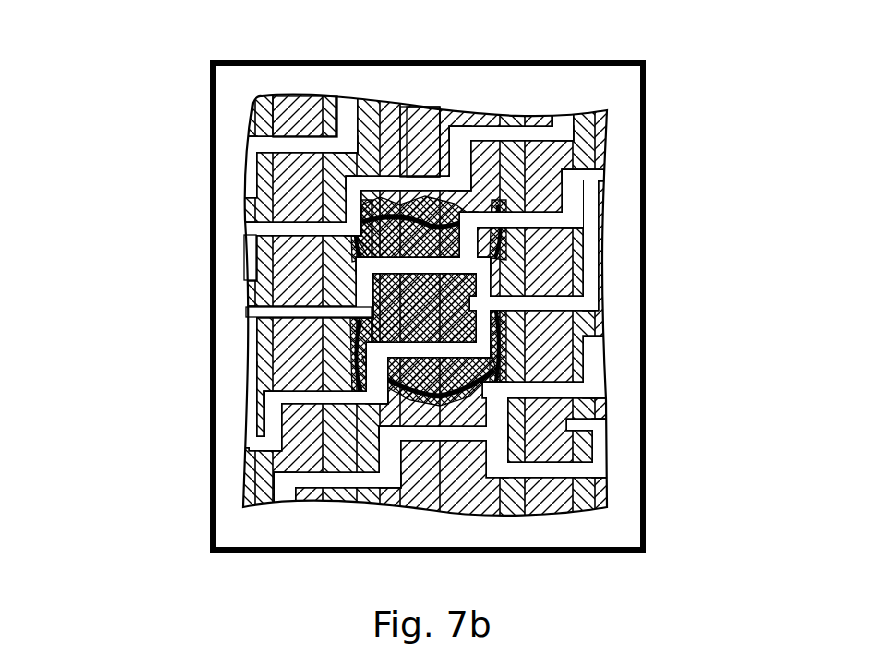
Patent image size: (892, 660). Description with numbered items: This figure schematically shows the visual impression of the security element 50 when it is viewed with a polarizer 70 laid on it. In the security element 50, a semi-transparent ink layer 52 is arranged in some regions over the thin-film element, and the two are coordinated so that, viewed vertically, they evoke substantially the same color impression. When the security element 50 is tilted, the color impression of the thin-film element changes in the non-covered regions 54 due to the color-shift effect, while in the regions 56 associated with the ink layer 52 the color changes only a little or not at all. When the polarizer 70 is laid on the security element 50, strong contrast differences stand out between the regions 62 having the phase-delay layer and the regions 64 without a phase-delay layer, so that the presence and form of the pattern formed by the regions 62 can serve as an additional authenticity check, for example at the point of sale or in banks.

The security element 50 is at (160, 62).
The semi-transparent ink layer 52 is at (425, 108).
The non-covered regions 54 is at (298, 108).
The regions covered by the ink layer 56 is at (423, 142).
The regions having the phase-delay layer 62 is at (252, 300).
The regions without a phase-delay layer 64 is at (258, 262).
The polarizer 70 is at (652, 163).